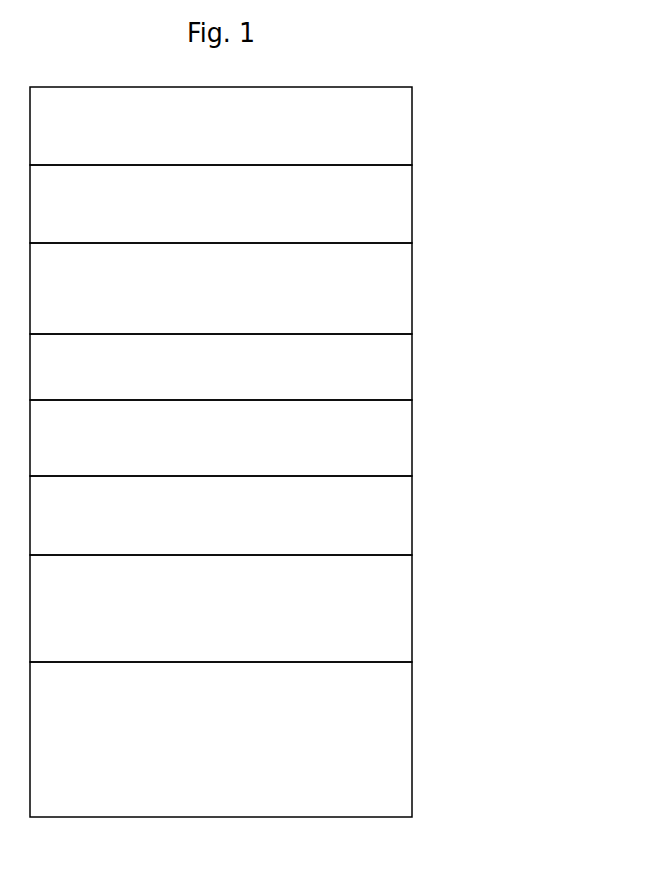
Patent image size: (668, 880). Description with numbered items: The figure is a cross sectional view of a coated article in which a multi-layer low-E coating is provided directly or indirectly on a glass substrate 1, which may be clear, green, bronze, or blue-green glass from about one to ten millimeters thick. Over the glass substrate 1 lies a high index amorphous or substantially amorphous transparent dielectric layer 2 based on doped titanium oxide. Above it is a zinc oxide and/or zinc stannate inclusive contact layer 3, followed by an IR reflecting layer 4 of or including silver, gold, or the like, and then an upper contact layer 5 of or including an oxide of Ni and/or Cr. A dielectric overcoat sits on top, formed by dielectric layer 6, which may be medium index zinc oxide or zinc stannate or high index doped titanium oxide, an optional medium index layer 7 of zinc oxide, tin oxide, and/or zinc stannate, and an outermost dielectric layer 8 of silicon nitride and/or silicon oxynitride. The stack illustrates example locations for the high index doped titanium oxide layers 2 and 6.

The glass substrate 1 is at (370, 716).
The high index transparent dielectric layer 2 is at (348, 595).
The contact layer 3 is at (348, 497).
The IR reflecting layer 4 is at (340, 418).
The upper contact layer 5 is at (393, 343).
The dielectric layer 6 is at (406, 278).
The medium index layer 7 is at (316, 199).
The dielectric layer 8 is at (371, 121).